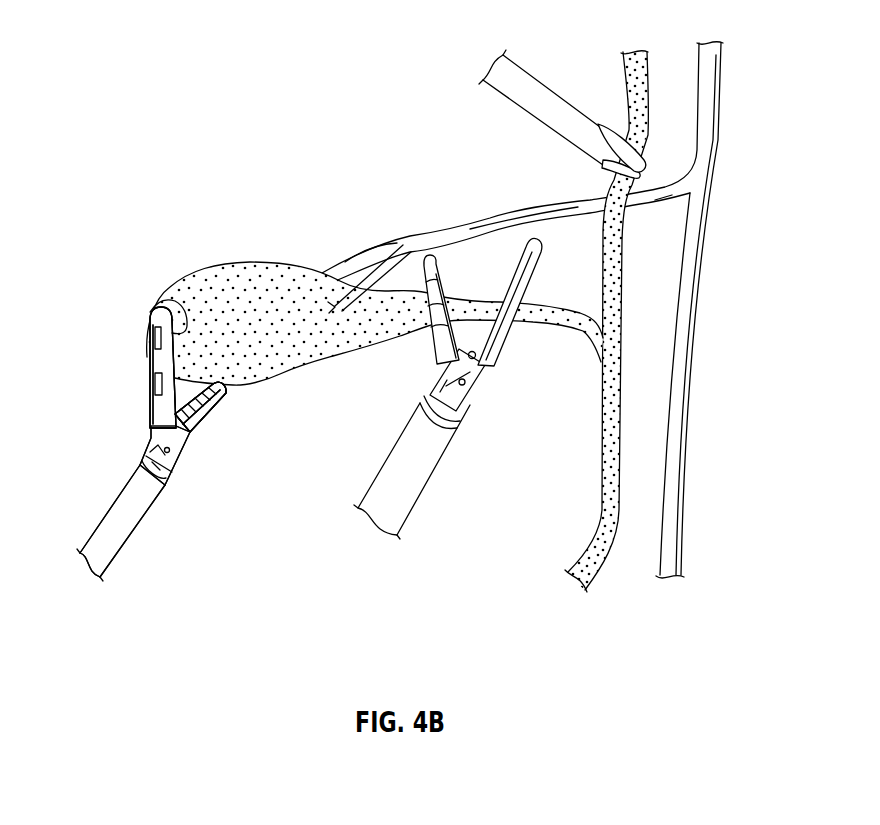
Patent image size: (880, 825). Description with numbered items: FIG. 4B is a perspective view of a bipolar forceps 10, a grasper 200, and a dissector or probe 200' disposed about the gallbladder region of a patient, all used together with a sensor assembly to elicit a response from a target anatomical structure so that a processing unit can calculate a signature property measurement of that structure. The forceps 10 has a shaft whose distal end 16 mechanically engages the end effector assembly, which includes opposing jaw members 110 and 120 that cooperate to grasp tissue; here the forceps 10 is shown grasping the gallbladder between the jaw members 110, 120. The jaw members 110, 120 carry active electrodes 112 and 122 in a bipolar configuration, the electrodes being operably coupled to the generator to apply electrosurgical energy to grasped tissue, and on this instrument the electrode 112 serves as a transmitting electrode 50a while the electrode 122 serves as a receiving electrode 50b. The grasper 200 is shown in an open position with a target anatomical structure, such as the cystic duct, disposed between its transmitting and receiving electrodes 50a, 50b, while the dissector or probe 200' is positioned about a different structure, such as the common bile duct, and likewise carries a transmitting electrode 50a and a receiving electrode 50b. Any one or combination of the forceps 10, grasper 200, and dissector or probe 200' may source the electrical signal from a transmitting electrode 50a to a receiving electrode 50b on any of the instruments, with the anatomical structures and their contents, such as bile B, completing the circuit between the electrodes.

The bipolar forceps 10 is at (113, 461).
The distal end 16 is at (133, 510).
The jaw member 110 is at (151, 357).
The active electrode 112 is at (172, 290).
The jaw member 120 is at (222, 388).
The active electrode 122 is at (217, 410).
The grasper 200 is at (405, 444).
The dissector or probe 200' is at (509, 107).
The transmitting electrode 50a is at (461, 269).
The receiving electrode 50b is at (512, 288).
The bile B is at (215, 264).